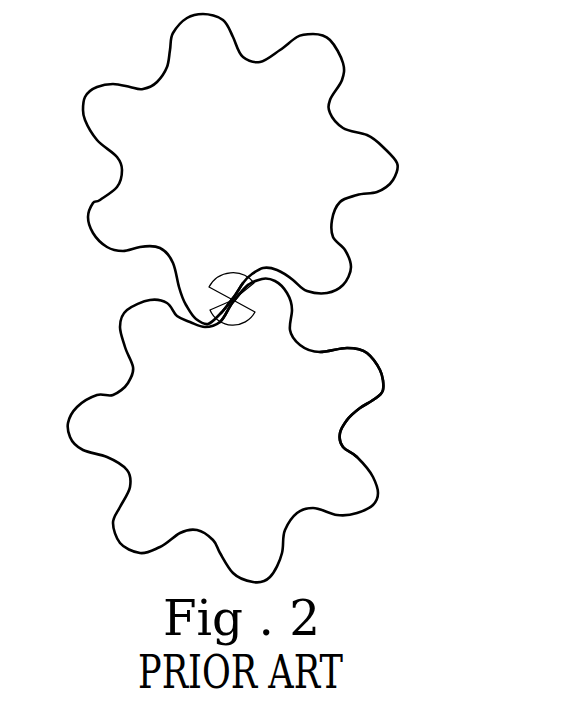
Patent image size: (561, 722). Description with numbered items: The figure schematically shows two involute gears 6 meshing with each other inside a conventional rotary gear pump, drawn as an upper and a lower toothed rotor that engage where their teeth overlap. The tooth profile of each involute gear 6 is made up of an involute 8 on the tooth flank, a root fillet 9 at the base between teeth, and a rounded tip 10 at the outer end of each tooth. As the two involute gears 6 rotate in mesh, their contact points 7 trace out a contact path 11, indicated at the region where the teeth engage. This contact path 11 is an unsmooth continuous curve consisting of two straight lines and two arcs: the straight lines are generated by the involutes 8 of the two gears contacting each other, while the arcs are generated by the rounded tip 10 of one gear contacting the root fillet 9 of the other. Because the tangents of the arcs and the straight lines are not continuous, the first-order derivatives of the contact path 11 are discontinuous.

The involute gear 6 is at (137, 323).
The contact point 7 is at (233, 300).
The involute 8 is at (360, 408).
The root fillet 9 is at (340, 432).
The rounded tip 10 is at (380, 368).
The contact path 11 is at (227, 272).